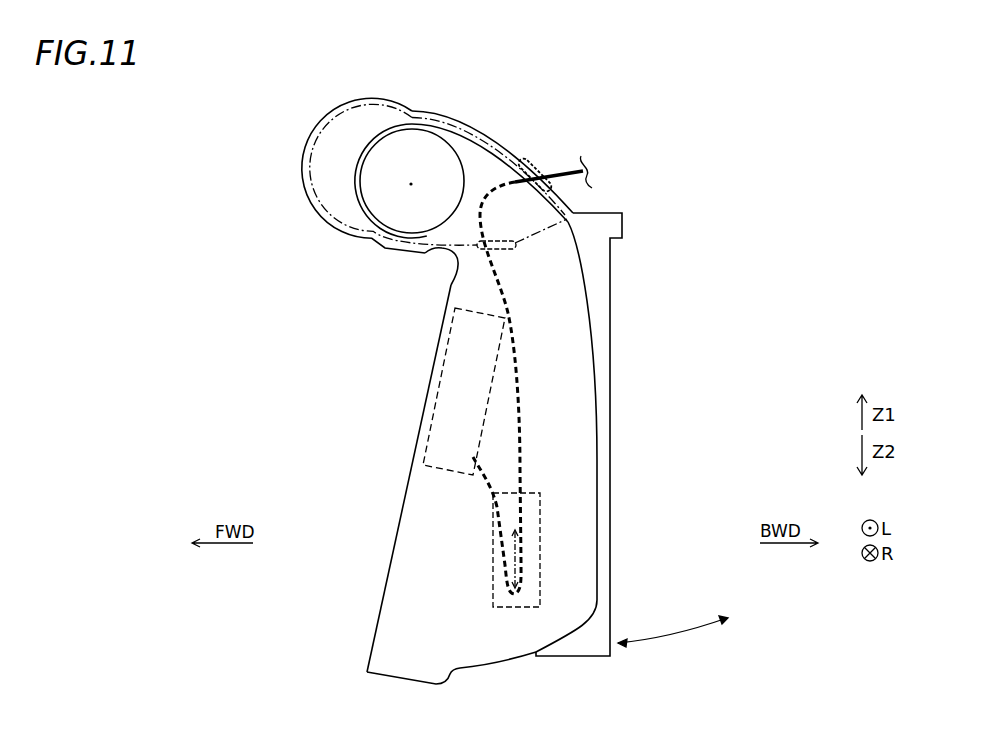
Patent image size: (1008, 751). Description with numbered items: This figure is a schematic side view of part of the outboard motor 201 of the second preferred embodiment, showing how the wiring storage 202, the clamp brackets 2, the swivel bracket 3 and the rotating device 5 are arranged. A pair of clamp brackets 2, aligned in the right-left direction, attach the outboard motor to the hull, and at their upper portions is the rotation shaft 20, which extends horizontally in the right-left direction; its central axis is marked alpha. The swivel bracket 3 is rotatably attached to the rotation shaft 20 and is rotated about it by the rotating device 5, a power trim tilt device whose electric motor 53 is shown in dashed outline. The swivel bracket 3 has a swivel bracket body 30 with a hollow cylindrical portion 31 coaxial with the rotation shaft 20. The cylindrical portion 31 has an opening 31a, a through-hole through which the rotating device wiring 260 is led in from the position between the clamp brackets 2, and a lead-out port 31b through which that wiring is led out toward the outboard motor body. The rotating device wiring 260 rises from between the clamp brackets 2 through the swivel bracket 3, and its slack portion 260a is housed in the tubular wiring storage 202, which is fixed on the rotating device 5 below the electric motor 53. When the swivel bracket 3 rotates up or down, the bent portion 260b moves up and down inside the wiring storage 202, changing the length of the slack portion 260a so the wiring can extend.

The outboard motor 201 is at (121, 96).
The clamp bracket 2 is at (452, 284).
The swivel bracket 3 is at (390, 105).
The rotating device 5 is at (437, 345).
The rotation shaft 20 is at (367, 191).
The swivel bracket body 30 is at (383, 116).
The cylindrical portion 31 is at (437, 110).
The opening 31a is at (507, 249).
The lead-out port 31b is at (533, 163).
The electric motor 53 is at (450, 377).
The wiring storage 202 is at (543, 498).
The rotating device wiring 260 is at (570, 168).
The slack portion 260a is at (532, 557).
The bent portion 260b is at (518, 607).